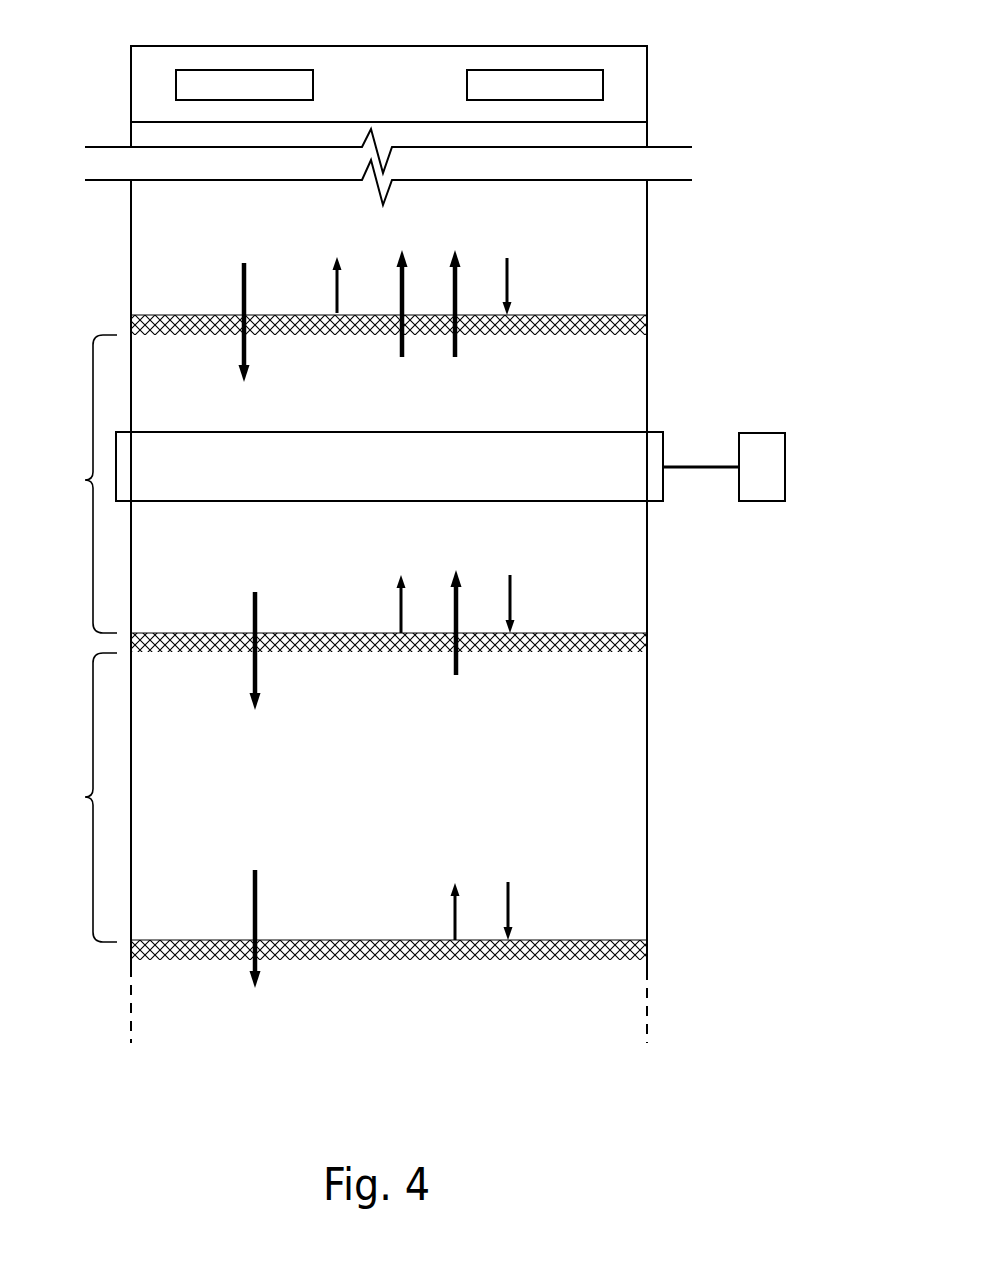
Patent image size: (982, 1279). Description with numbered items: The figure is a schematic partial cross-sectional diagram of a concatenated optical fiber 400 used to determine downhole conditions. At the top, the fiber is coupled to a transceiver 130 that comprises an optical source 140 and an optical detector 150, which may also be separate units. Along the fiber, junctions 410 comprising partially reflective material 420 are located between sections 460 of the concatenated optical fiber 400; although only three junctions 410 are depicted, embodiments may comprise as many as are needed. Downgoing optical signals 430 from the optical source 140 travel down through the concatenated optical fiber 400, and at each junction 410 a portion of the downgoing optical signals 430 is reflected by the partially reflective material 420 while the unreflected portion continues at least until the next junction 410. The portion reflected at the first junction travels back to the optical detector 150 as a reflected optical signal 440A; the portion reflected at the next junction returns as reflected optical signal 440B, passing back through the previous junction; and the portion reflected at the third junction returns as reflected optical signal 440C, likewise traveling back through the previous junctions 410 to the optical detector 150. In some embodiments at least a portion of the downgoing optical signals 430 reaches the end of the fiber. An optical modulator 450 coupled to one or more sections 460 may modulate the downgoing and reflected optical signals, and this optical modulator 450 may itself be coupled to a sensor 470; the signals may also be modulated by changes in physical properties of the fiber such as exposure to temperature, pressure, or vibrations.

The transceiver 130 is at (383, 46).
The optical source 140 is at (603, 82).
The optical detector 150 is at (176, 88).
The concatenated optical fiber 400 is at (605, 748).
The junction 410 is at (653, 315).
The partially reflective material 420 is at (604, 314).
The downgoing optical signals 430 is at (240, 345).
The reflected optical signal 440A is at (333, 290).
The reflected optical signal 440B is at (403, 280).
The reflected optical signal 440C is at (458, 288).
The optical modulator 450 is at (657, 432).
The sections of concatenated optical fiber 460 is at (77, 638).
The sensor 470 is at (787, 463).